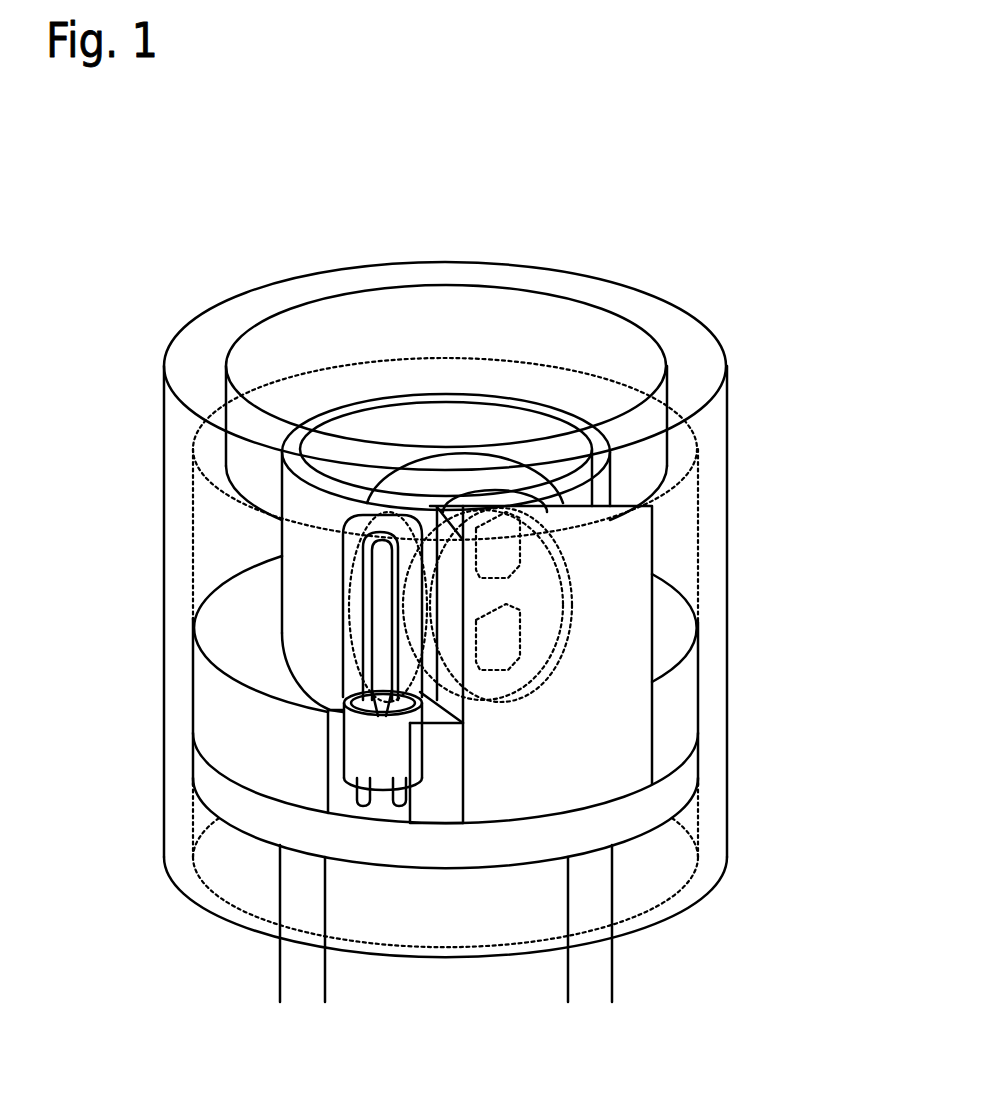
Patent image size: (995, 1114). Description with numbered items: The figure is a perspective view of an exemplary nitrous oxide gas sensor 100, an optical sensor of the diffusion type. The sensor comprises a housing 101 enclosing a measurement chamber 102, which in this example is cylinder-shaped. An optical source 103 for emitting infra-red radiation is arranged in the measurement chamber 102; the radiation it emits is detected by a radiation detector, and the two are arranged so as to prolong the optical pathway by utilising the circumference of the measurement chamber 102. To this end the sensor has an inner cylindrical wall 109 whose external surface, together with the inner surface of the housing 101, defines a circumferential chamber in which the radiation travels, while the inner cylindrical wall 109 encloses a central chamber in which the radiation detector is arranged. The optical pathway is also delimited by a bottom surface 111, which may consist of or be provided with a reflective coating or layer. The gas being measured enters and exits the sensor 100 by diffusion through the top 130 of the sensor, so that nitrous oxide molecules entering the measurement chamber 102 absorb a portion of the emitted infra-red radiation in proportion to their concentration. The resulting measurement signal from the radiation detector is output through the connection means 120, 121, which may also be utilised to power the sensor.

The gas sensor 100 is at (178, 260).
The housing 101 is at (727, 585).
The measurement chamber 102 is at (218, 540).
The optical source 103 is at (378, 748).
The inner cylindrical wall 109 is at (372, 400).
The bottom surface 111 is at (237, 642).
The connection means 120 is at (298, 960).
The connection means 121 is at (590, 960).
The top 130 is at (546, 334).